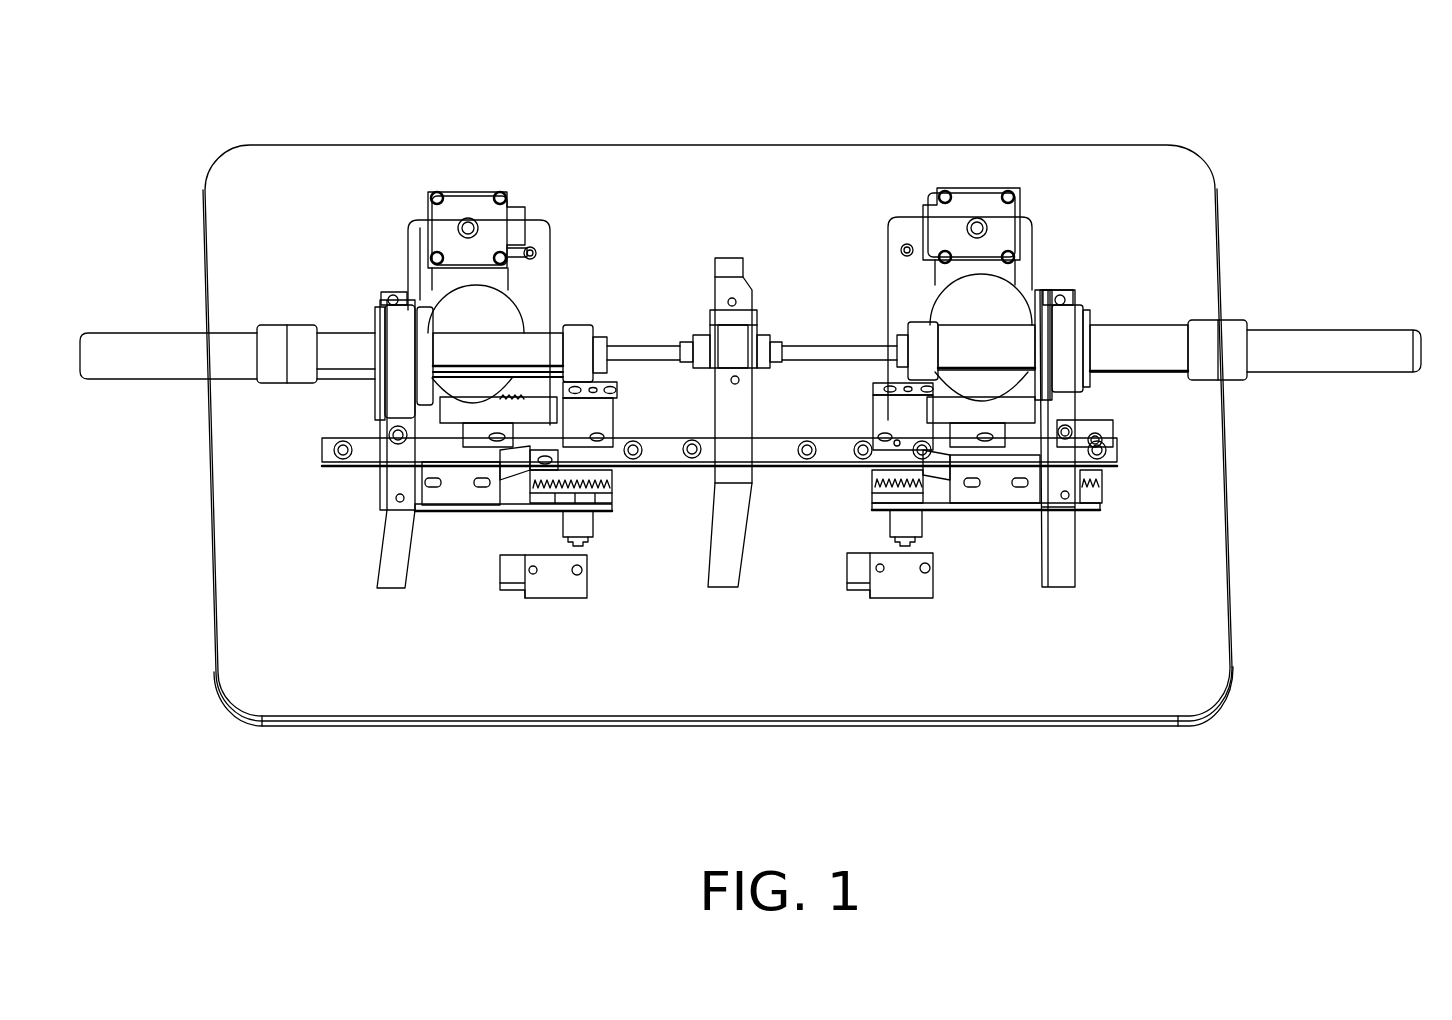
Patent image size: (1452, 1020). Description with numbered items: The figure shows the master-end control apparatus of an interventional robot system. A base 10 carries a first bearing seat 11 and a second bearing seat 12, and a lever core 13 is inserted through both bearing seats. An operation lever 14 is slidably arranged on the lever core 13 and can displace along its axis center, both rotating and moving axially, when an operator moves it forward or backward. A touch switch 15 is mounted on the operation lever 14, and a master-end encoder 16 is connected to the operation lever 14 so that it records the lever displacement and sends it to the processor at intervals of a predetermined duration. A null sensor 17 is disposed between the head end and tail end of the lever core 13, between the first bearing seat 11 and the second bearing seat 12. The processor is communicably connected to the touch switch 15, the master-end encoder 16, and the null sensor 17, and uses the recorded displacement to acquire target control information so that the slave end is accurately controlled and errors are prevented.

The base 10 is at (292, 215).
The first bearing seat 11 is at (398, 322).
The second bearing seat 12 is at (738, 317).
The lever core 13 is at (657, 350).
The operation lever 14 is at (580, 335).
The touch switch 15 is at (290, 358).
The master-end encoder 16 is at (432, 360).
The null sensor 17 is at (558, 568).